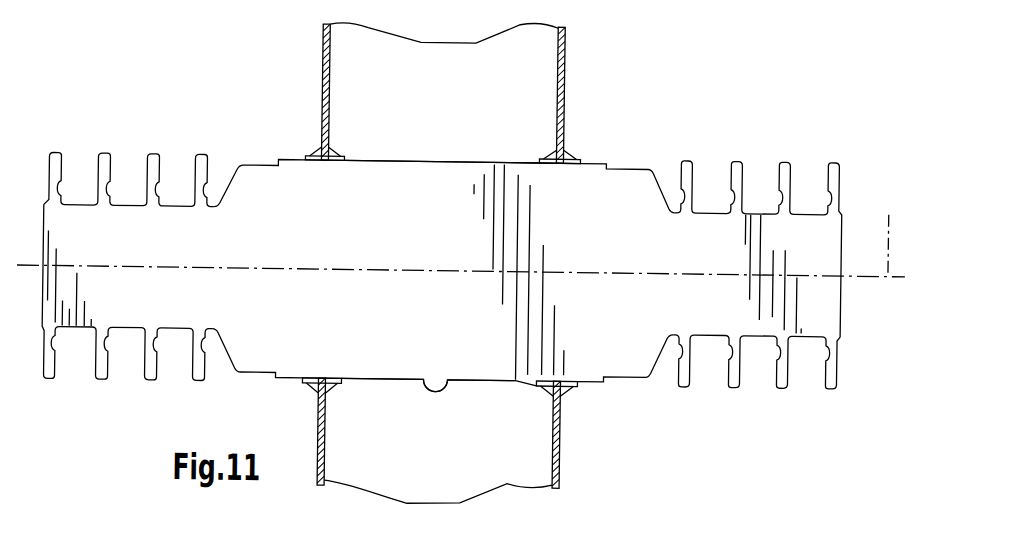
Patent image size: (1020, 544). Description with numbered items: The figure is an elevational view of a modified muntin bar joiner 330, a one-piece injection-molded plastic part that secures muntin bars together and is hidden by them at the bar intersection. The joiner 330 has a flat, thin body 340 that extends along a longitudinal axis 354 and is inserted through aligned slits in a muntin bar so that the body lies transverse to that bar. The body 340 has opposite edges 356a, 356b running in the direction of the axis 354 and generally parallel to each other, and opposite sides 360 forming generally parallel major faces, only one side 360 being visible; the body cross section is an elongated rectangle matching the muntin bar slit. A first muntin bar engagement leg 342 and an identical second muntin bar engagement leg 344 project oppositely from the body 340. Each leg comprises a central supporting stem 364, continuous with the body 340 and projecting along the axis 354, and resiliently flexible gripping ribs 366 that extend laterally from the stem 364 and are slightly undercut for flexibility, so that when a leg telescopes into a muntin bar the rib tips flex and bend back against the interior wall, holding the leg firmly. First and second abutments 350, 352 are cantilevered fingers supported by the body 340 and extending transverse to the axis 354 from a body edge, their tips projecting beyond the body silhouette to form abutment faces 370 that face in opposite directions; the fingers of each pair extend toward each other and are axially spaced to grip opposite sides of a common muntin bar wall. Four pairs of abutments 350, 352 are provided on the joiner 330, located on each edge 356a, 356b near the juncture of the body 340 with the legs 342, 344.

The muntin bar joiner 330 is at (462, 263).
The body 340 is at (437, 232).
The first muntin bar engagement leg 342 is at (124, 250).
The second muntin bar engagement leg 344 is at (753, 255).
The first abutment 350 is at (310, 153).
The second abutment 352 is at (337, 152).
The longitudinal axis 354 is at (463, 226).
The body edge 356a is at (482, 157).
The body edge 356b is at (430, 375).
The body side 360 is at (446, 316).
The central supporting stem 364 is at (73, 202).
The gripping ribs 366 is at (833, 161).
The muntin bar abutment face 370 is at (322, 153).